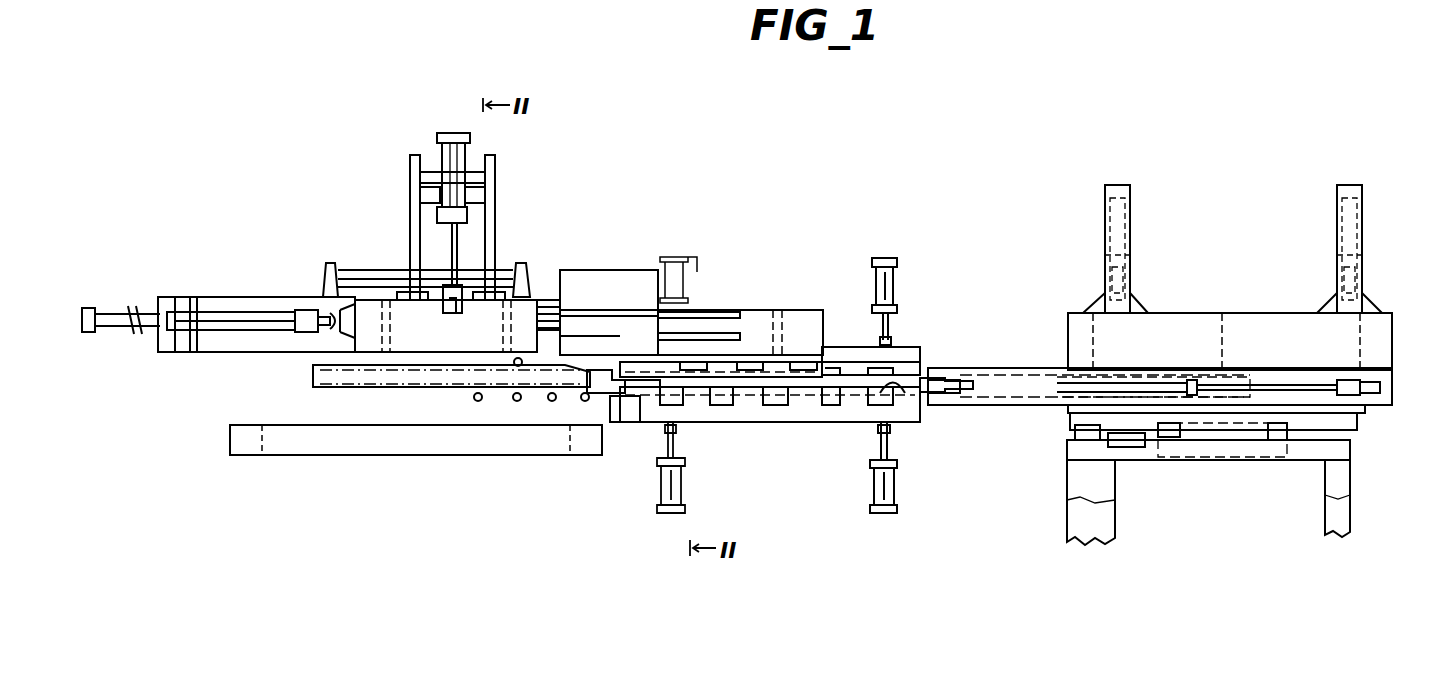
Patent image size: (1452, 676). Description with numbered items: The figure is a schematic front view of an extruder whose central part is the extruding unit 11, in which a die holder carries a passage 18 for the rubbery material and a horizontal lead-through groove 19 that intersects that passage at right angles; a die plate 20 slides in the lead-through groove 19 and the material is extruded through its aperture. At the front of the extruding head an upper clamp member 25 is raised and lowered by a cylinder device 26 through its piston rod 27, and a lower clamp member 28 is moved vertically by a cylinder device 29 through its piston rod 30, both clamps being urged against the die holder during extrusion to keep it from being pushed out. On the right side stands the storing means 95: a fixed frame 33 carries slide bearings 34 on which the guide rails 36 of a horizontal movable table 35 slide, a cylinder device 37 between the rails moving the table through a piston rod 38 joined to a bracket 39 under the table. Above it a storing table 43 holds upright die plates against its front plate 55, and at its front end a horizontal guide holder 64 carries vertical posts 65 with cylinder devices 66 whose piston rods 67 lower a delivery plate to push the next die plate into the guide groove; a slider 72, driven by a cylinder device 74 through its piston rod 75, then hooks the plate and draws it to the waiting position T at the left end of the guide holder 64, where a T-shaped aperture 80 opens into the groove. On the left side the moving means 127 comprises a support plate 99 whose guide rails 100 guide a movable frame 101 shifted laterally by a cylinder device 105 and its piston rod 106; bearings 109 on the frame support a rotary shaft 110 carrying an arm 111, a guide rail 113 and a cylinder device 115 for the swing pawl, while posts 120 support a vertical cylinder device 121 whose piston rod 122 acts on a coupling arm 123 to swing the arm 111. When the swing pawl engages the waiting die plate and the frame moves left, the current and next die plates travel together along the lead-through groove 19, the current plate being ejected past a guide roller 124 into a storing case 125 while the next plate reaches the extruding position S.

The extruding unit 11 is at (807, 454).
The passage 18 is at (805, 396).
The lead-through groove 19 is at (905, 395).
The die plate 20 is at (333, 388).
The upper clamp member 25 is at (910, 347).
The cylinder device 26 is at (893, 275).
The piston rod 27 is at (880, 325).
The lower clamp member 28 is at (853, 414).
The cylinder device 29 is at (896, 485).
The piston rod 30 is at (889, 445).
The fixed frame 33 is at (1112, 524).
The slide bearings 34 is at (1075, 428).
The movable table 35 is at (1360, 422).
The guide rails 36 is at (1345, 446).
The cylinder device 37 is at (1205, 457).
The piston rod 38 is at (1143, 448).
The bracket 39 is at (1078, 438).
The storing table 43 is at (1385, 312).
The front plate 55 is at (1380, 336).
The guide holder 64 is at (1393, 370).
The posts 65 is at (1117, 185).
The cylinder devices 66 is at (1128, 230).
The piston rods 67 is at (1128, 280).
The slider 72 is at (1365, 408).
The cylinder device 74 is at (1127, 378).
The piston rod 75 is at (1270, 380).
The T-shaped aperture 80 is at (930, 380).
The storing means 95 is at (1234, 232).
The support plate 99 is at (795, 310).
The guide rails 100 is at (720, 310).
The movable frame 101 is at (268, 297).
The cylinder device 105 is at (223, 297).
The piston rod 106 is at (328, 330).
The bearings 109 is at (330, 262).
The rotary shaft 110 is at (512, 268).
The arm 111 is at (600, 283).
The guide rail 113 is at (637, 414).
The cylinder device 115 is at (597, 372).
The posts 120 is at (497, 172).
The cylinder device 121 is at (447, 136).
The piston rod 122 is at (437, 215).
The coupling arm 123 is at (440, 262).
The guide roller 124 is at (512, 390).
The storing case 125 is at (400, 455).
The moving means 127 is at (566, 178).
The extruding position S is at (722, 396).
The waiting position T is at (982, 368).